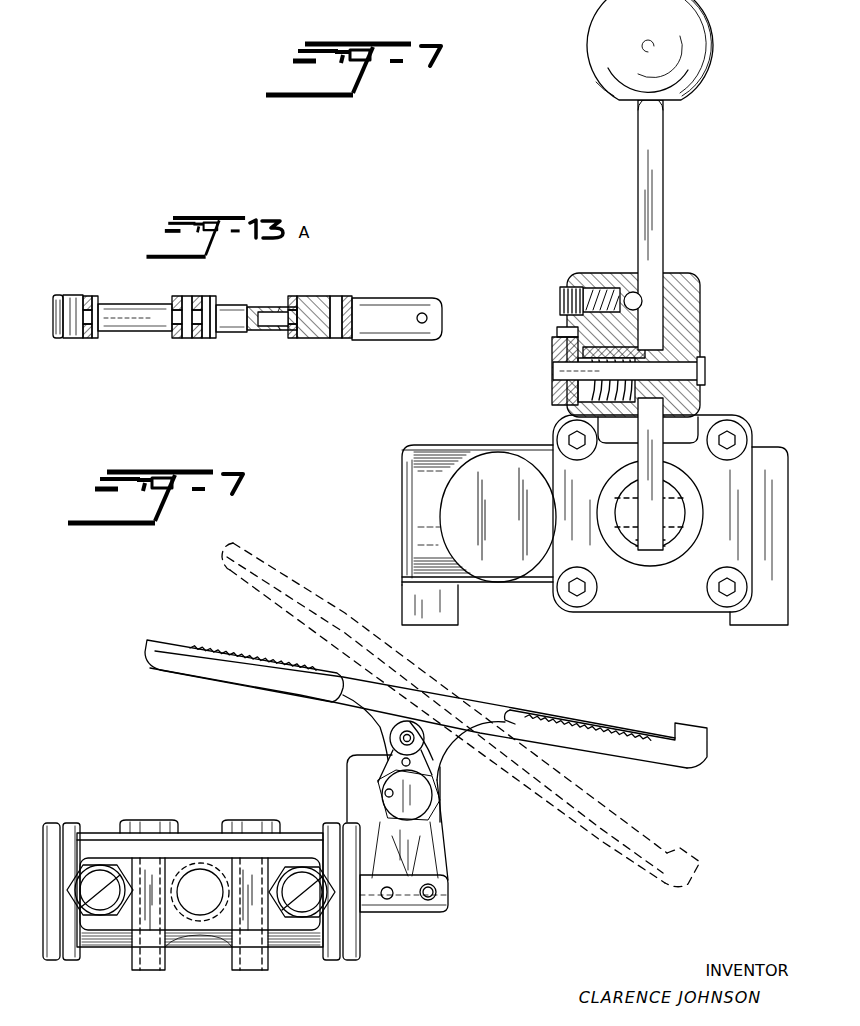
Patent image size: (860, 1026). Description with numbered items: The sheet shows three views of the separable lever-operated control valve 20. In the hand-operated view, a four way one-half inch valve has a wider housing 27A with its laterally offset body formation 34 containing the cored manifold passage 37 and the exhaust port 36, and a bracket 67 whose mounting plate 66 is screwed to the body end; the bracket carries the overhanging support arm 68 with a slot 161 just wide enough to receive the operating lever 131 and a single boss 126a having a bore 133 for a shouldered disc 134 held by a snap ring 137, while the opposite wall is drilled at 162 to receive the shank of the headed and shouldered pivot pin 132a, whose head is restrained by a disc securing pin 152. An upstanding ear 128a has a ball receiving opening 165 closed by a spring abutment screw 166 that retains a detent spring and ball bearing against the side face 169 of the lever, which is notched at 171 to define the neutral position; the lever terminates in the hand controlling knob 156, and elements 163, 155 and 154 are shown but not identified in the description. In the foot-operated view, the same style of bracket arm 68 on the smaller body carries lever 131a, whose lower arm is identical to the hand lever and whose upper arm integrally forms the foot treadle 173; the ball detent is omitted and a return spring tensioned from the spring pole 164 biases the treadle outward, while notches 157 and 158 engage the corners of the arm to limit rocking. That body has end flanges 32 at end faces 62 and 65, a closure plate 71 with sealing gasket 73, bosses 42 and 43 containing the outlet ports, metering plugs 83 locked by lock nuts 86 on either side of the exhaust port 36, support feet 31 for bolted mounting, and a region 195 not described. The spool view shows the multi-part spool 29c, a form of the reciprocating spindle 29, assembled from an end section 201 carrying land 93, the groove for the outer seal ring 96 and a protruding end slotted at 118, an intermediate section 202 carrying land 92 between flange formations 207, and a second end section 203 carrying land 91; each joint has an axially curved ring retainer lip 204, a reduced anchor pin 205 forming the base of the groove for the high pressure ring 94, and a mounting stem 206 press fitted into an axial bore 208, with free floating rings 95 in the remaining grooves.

In FIG. 6, the knob 156 is at (712, 28).
In FIG. 6, the operating lever 131 is at (662, 154).
In FIG. 6, the side face 169 is at (638, 192).
In FIG. 6, the detent notch 171 is at (645, 285).
In FIG. 6, the boss 126a is at (580, 273).
In FIG. 7, the boss 126a is at (480, 773).
In FIG. 6, the upstanding ear 128a is at (597, 273).
In FIG. 7, the upstanding ear 128a is at (395, 733).
In FIG. 6, the ball receiving opening 165 is at (617, 288).
In FIG. 6, the spring abutment screw 166 is at (560, 292).
In FIG. 7, the spring abutment screw 166 is at (418, 742).
In FIG. 6, the support arm 68 is at (670, 274).
In FIG. 7, the support arm 68 is at (348, 760).
In FIG. 6, the slot 161 is at (702, 284).
In FIG. 6, the housing wall 163 is at (690, 320).
In FIG. 6, the drilled hole 162 is at (660, 340).
In FIG. 6, the disc securing pin 152 is at (560, 330).
In FIG. 7, the disc securing pin 152 is at (412, 762).
In FIG. 6, the snap ring 137 is at (705, 365).
In FIG. 6, the spring pole 164 is at (565, 352).
In FIG. 7, the spring pole 164 is at (386, 795).
In FIG. 6, the pivot pin 132a is at (710, 375).
In FIG. 6, the shouldered disc 134 is at (572, 375).
In FIG. 7, the shouldered disc 134 is at (432, 800).
In FIG. 6, the cross bore 133 is at (565, 388).
In FIG. 6, the housing 27A is at (453, 441).
In FIG. 7, the housing 27A is at (190, 838).
In FIG. 6, the body formation 34 is at (530, 458).
In FIG. 7, the body formation 34 is at (158, 858).
In FIG. 6, the pivot boss 155 is at (670, 503).
In FIG. 7, the pivot boss 155 is at (450, 882).
In FIG. 6, the slot 118 is at (636, 540).
In FIG. 7, the slot 118 is at (410, 915).
In FIG. 6, the stem foot 154 is at (652, 536).
In FIG. 7, the stem foot 154 is at (437, 892).
In FIG. 6, the manifold passage 37 is at (440, 625).
In FIG. 6, the operating lever support bracket 67 is at (580, 614).
In FIG. 7, the operating lever support bracket 67 is at (342, 795).
In FIG. 6, the mounting plate 66 is at (625, 604).
In FIG. 6, the valve 20 is at (695, 614).
In FIG. 7, the valve 20 is at (98, 834).
In FIG. 13A, the O-rings 96 is at (62, 296).
In FIG. 13A, the second end section 203 is at (73, 296).
In FIG. 13A, the ring retainer lip 204 is at (88, 296).
In FIG. 13A, the axial bores 208 is at (130, 305).
In FIG. 13A, the valving land 92 is at (192, 296).
In FIG. 13A, the intermediate section 202 is at (215, 296).
In FIG. 13A, the mounting stem 206 is at (280, 308).
In FIG. 13A, the anchor pin 205 is at (330, 296).
In FIG. 13A, the multi-part spool 29c is at (366, 298).
In FIG. 13A, the end section 201 is at (410, 298).
In FIG. 13A, the valving land 91 is at (62, 338).
In FIG. 13A, the O-rings 94 is at (86, 338).
In FIG. 13A, the flange formations 207 is at (96, 333).
In FIG. 13A, the O-rings 95 is at (182, 338).
In FIG. 13A, the valving land 93 is at (335, 338).
In FIG. 7, the foot treadle 173 is at (150, 640).
In FIG. 7, the closure plate 71 is at (50, 823).
In FIG. 7, the sealing gasket 73 is at (64, 823).
In FIG. 7, the boss 42 is at (140, 820).
In FIG. 7, the boss 43 is at (258, 820).
In FIG. 7, the exhaust port 36 is at (202, 885).
In FIG. 7, the lock nuts 86 is at (102, 905).
In FIG. 7, the metering plugs 83 is at (300, 905).
In FIG. 7, the end flanges 32 is at (80, 958).
In FIG. 7, the end face 62 is at (50, 962).
In FIG. 7, the support feet 31 is at (147, 972).
In FIG. 7, the recess 195 is at (175, 968).
In FIG. 7, the end face 65 is at (348, 962).
In FIG. 7, the operating lever 131a is at (443, 832).
In FIG. 7, the notch 158 is at (388, 755).
In FIG. 7, the notch 157 is at (397, 856).
In FIG. 7, the spindle 29 is at (372, 913).